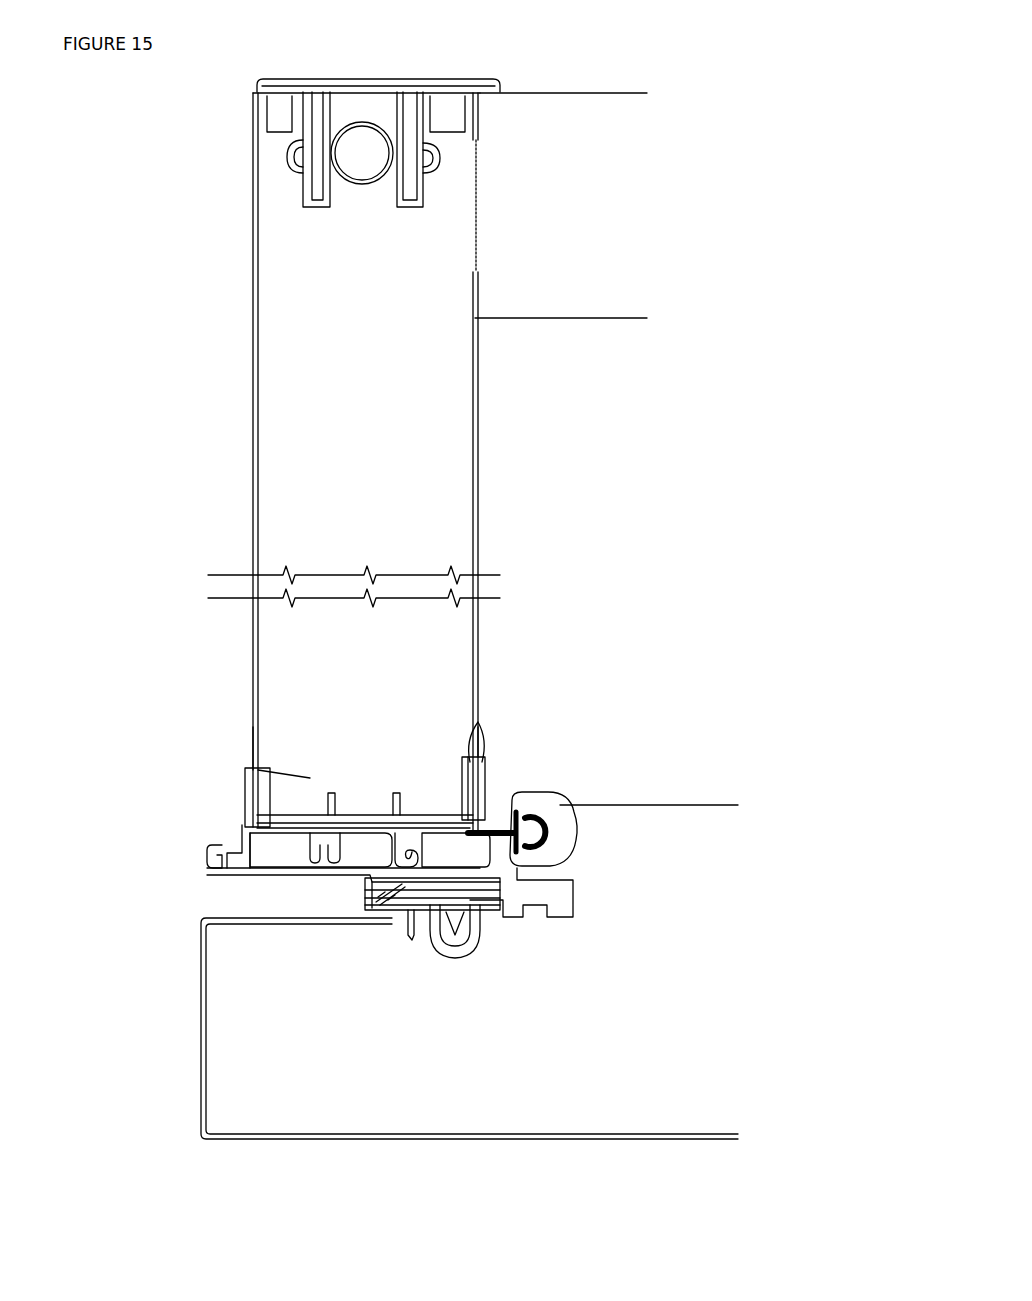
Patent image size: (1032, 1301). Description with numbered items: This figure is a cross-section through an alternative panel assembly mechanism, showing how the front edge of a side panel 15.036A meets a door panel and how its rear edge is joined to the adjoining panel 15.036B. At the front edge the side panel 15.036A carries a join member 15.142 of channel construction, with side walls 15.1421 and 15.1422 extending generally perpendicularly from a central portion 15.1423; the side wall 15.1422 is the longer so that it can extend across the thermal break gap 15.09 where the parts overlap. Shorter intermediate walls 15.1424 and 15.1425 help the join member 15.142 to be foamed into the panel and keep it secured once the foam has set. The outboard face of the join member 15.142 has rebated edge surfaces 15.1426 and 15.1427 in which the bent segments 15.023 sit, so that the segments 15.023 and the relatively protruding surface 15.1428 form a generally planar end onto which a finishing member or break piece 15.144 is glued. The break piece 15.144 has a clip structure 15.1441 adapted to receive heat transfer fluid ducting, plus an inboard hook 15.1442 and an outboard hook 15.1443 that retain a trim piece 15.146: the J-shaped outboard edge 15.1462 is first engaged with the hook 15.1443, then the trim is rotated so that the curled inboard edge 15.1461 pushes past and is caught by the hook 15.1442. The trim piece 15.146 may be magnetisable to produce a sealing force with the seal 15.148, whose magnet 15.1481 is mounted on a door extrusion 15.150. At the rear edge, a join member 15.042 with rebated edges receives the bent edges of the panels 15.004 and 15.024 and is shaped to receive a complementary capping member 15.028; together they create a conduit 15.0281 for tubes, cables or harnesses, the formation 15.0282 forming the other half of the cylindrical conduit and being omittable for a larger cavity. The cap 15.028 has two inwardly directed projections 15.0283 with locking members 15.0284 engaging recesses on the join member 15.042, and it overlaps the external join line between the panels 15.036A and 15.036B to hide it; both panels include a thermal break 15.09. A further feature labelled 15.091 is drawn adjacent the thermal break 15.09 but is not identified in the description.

The panel 15.004 is at (254, 547).
The capping member 15.028 is at (383, 82).
The conduit 15.0281 is at (362, 145).
The formation 15.0282 is at (370, 118).
The inwardly directed projection 15.0283 is at (418, 123).
The locking member 15.0284 is at (357, 167).
The join member 15.042 is at (364, 186).
The seam 15.091 is at (480, 203).
The thermal break 15.09 is at (480, 217).
The panel 15.024 is at (478, 530).
The side panel 15.036A is at (358, 517).
The panel 15.036B is at (575, 272).
The join member 15.142 is at (305, 800).
The side wall 15.1421 is at (258, 768).
The side wall 15.1422 is at (473, 752).
The central portion 15.1423 is at (472, 737).
The intermediate wall 15.1424 is at (335, 797).
The intermediate wall 15.1425 is at (395, 797).
The rebated edge surface 15.1426 is at (273, 823).
The rebated edge surface 15.1427 is at (427, 823).
The protruding surface 15.1428 is at (308, 777).
The bent segment 15.023 is at (260, 770).
The inboard hook 15.1442 is at (400, 838).
The outboard hook 15.1443 is at (232, 825).
The break piece 15.144 is at (293, 830).
The clip structure 15.1441 is at (327, 853).
The outboard edge 15.1462 is at (207, 853).
The trim piece 15.146 is at (300, 870).
The inboard edge 15.1461 is at (440, 905).
The seal 15.148 is at (385, 885).
The magnet 15.1481 is at (377, 893).
The door extrusion 15.150 is at (422, 910).